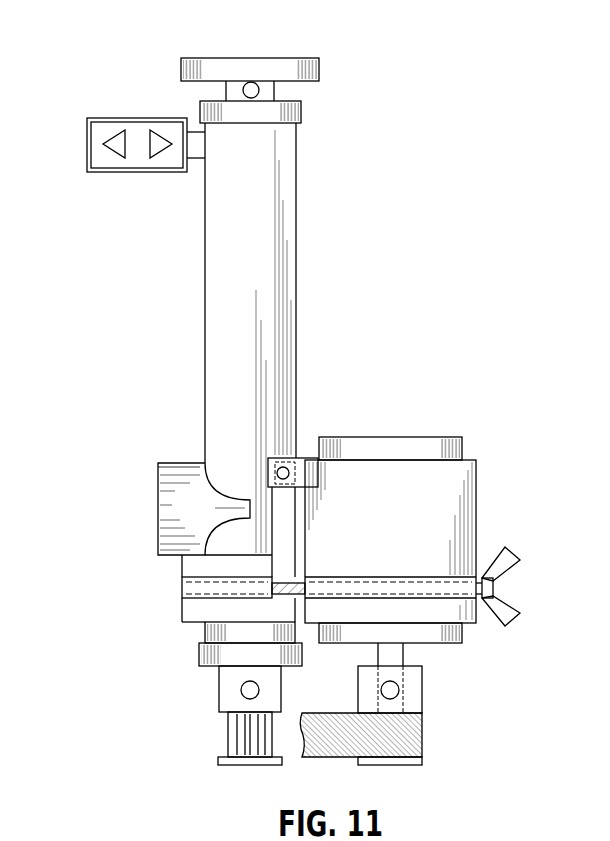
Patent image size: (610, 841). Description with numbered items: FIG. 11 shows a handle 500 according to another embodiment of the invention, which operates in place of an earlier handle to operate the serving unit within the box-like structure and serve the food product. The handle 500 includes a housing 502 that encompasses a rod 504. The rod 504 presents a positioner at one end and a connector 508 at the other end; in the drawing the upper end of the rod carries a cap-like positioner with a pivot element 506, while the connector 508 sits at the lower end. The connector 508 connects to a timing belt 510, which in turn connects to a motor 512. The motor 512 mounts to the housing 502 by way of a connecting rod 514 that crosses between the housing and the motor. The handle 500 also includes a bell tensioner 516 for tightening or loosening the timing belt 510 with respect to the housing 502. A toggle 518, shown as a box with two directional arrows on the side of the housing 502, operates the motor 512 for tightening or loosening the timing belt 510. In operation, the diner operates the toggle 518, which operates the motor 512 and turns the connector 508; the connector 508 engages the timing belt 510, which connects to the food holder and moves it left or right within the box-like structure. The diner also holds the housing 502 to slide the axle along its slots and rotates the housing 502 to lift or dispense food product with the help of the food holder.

The handle 500 is at (443, 67).
The housing 502 is at (275, 316).
The rod 504 is at (205, 68).
The upper collar with pivot 506 is at (276, 88).
The connector 508 is at (237, 738).
The timing belt 510 is at (400, 735).
The motor 512 is at (420, 445).
The connecting rod 514 is at (183, 586).
The bell tensioner 516 is at (493, 588).
The toggle 518 is at (126, 118).